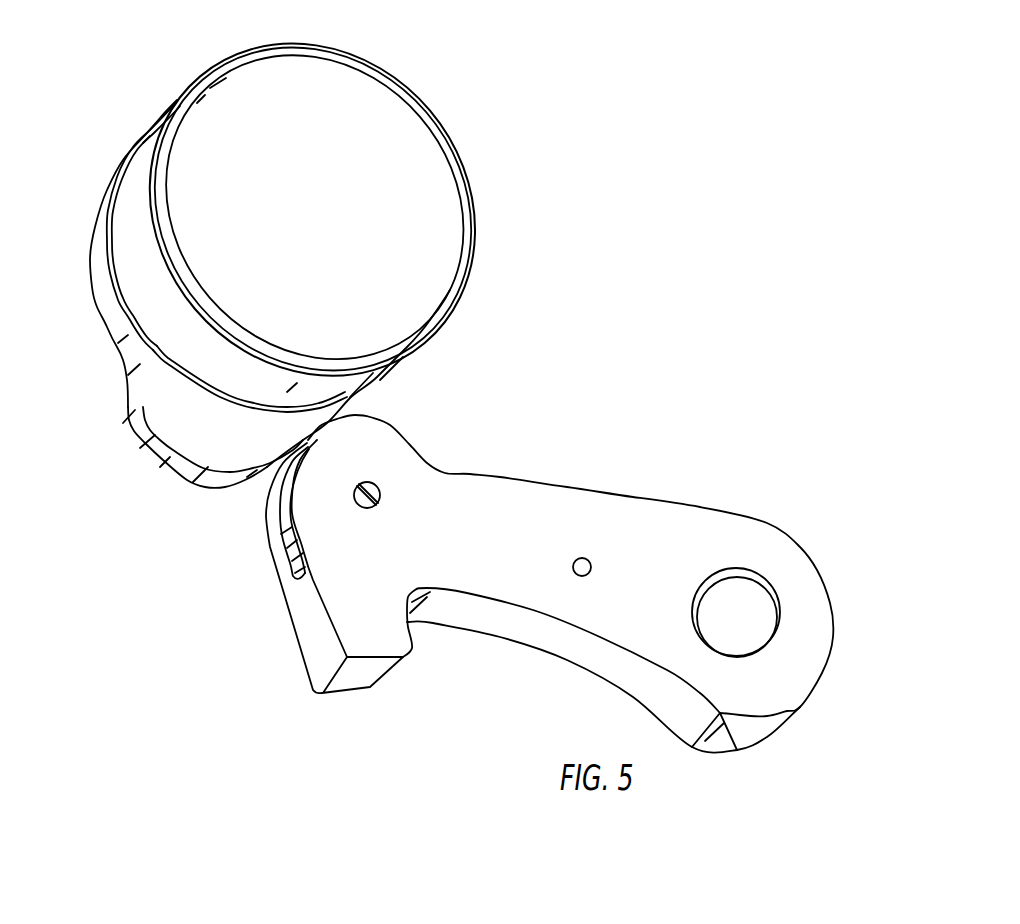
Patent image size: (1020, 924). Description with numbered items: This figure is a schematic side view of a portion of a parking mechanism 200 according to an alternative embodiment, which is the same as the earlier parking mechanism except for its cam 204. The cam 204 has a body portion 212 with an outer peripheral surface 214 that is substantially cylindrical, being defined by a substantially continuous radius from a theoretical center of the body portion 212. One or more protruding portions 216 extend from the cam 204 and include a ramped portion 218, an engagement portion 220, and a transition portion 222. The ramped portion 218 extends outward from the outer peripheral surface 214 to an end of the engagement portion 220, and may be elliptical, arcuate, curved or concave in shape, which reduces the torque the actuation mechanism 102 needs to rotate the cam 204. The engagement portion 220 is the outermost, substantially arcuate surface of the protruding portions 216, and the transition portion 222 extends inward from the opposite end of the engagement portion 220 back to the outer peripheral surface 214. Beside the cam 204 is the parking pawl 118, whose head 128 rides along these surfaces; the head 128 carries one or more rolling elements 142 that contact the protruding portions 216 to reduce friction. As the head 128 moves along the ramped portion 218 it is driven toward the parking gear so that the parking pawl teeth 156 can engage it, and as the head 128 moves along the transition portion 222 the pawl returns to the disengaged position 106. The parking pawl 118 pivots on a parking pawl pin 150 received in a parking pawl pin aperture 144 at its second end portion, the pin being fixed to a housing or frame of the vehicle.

The actuation mechanism 102 is at (390, 105).
The parking mechanism 200 is at (638, 128).
The disengaged position 106 is at (659, 220).
The body portion 212 is at (97, 263).
The outer peripheral surface 214 is at (97, 295).
The transition portion 222 is at (127, 393).
The cam 204 is at (160, 407).
The protruding portion 216 is at (135, 436).
The engagement portion 220 is at (170, 460).
The ramped portion 218 is at (358, 412).
The head 128 is at (392, 445).
The parking pawl 118 is at (531, 541).
The rolling element 142 is at (283, 527).
The parking pawl tooth 156 is at (302, 637).
The parking pawl pin 150 is at (750, 600).
The parking pawl pin aperture 144 is at (777, 603).